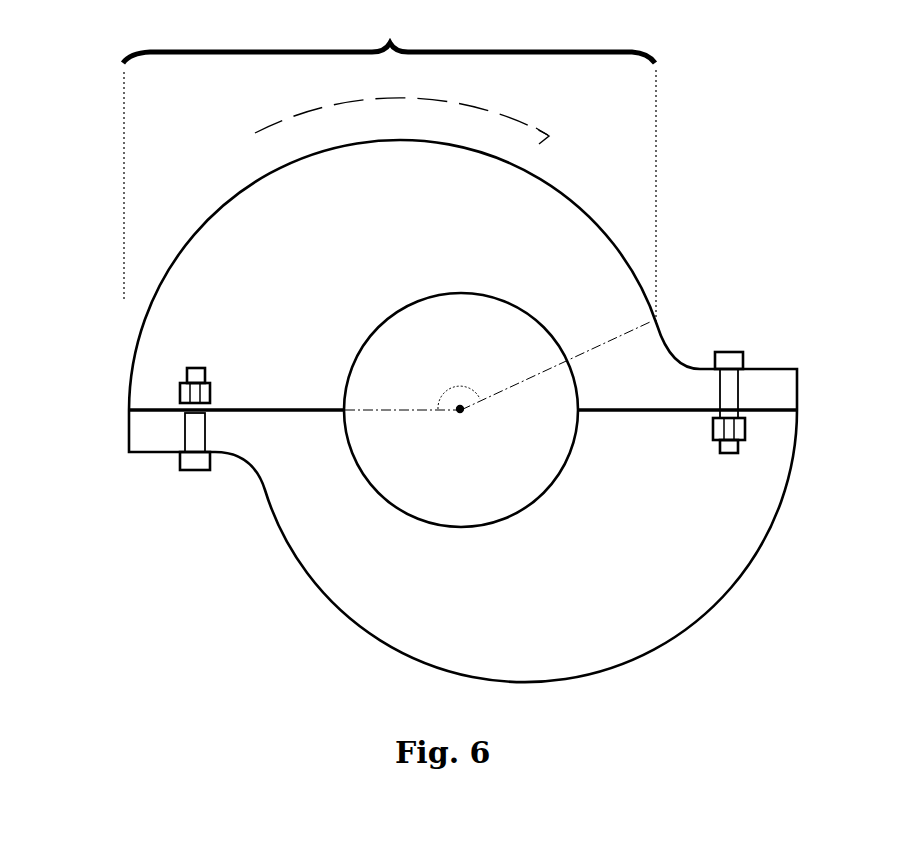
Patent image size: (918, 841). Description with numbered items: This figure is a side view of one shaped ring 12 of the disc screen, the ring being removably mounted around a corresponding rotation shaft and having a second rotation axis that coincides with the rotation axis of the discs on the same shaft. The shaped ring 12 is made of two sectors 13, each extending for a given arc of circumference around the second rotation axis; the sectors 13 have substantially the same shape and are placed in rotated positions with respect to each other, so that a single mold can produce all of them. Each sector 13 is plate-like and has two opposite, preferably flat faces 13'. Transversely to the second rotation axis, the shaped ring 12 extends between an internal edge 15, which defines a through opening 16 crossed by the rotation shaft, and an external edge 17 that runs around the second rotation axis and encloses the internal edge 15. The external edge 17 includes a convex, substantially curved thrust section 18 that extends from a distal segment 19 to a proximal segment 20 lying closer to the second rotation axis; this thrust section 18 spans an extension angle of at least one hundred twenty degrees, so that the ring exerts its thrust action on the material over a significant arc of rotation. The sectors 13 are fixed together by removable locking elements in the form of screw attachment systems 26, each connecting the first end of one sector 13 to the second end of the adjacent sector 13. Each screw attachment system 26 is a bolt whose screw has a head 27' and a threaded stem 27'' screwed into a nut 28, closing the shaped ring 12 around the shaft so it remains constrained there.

The shaped ring 12 is at (163, 584).
The sector 13 is at (463, 394).
The face 13' is at (463, 403).
The internal edge 15 is at (490, 298).
The through opening 16 is at (475, 470).
The external edge 17 is at (710, 613).
The thrust section 18 is at (389, 38).
The distal segment 19 is at (178, 207).
The proximal segment 20 is at (622, 222).
The screw attachment system 26 is at (165, 393).
The head 27' is at (711, 306).
The threaded stem 27'' is at (791, 493).
The nut 28 is at (745, 433).